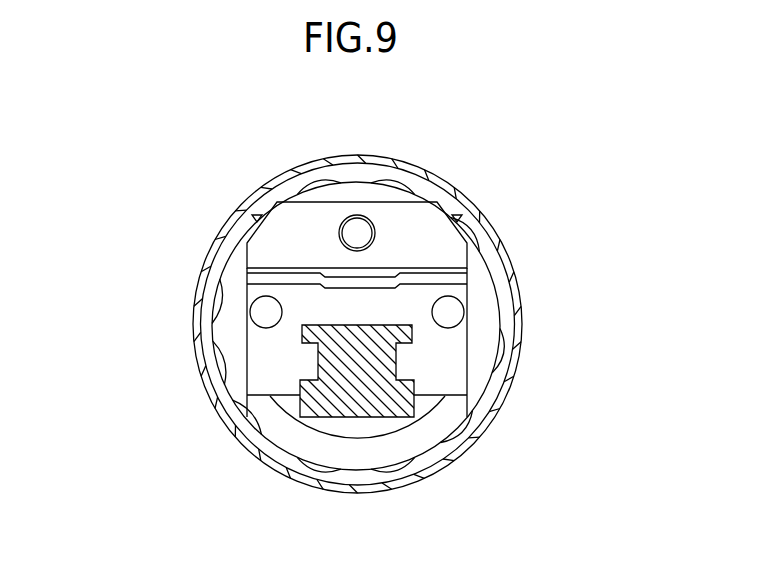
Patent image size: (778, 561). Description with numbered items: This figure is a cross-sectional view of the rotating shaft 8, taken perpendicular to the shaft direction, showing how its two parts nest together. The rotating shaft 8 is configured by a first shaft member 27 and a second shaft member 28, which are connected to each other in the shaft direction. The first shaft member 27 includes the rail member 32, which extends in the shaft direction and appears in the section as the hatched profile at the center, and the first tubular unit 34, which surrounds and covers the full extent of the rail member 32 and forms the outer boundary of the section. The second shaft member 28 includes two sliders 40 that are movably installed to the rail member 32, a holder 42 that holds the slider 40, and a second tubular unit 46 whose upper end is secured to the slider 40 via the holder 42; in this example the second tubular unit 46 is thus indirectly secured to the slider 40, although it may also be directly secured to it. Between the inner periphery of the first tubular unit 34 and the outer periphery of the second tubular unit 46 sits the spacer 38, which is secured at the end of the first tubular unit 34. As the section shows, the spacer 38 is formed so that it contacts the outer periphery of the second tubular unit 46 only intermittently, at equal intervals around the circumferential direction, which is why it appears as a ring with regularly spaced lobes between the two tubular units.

The rotating shaft 8 is at (518, 420).
The first shaft member 27 is at (580, 193).
The second shaft member 28 is at (132, 175).
The rail member 32 is at (363, 337).
The first tubular unit 34 is at (478, 210).
The spacer 38 is at (409, 182).
The slider 40 is at (265, 351).
The holder 42 is at (230, 275).
The second tubular unit 46 is at (292, 179).